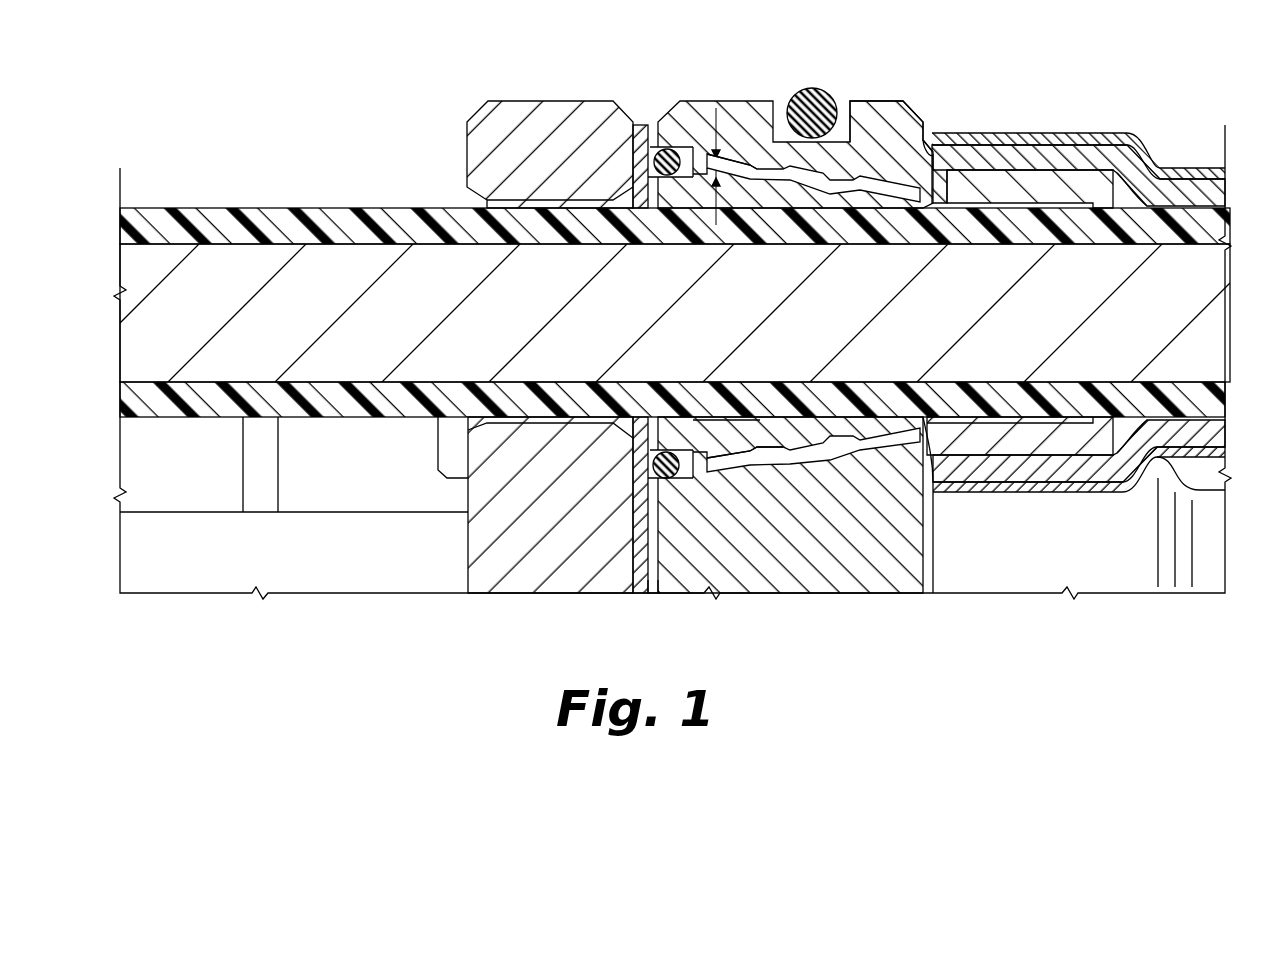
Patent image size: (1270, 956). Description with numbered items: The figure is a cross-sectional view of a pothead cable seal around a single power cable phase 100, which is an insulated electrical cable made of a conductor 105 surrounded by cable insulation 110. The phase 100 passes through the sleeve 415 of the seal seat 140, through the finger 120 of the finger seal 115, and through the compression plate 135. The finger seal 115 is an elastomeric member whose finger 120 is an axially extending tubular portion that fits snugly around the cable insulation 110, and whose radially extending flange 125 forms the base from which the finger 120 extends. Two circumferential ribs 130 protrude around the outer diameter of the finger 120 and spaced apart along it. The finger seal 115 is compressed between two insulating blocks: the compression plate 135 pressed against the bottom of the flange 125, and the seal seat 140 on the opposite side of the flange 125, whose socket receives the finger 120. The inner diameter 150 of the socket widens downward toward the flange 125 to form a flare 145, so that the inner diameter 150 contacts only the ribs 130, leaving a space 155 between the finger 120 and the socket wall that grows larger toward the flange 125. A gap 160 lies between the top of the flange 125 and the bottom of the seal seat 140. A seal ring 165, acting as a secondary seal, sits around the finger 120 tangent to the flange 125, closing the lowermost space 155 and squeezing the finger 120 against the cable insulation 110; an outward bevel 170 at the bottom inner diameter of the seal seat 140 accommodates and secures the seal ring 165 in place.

The power cable phase 100 is at (247, 168).
The conductor 105 is at (409, 324).
The cable insulation 110 is at (318, 208).
The finger seal 115 is at (707, 438).
The finger 120 is at (702, 188).
The flange 125 is at (640, 124).
The circumferential rib 130 is at (770, 448).
The compression plate 135 is at (541, 101).
The seal seat 140 is at (885, 111).
The flare 145 is at (902, 220).
The inner diameter 150 is at (731, 470).
The space 155 is at (718, 130).
The gap 160 is at (652, 596).
The seal ring 165 is at (667, 150).
The bevel 170 is at (682, 485).
The sleeve 415 is at (1053, 186).